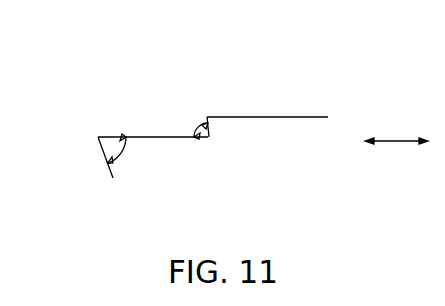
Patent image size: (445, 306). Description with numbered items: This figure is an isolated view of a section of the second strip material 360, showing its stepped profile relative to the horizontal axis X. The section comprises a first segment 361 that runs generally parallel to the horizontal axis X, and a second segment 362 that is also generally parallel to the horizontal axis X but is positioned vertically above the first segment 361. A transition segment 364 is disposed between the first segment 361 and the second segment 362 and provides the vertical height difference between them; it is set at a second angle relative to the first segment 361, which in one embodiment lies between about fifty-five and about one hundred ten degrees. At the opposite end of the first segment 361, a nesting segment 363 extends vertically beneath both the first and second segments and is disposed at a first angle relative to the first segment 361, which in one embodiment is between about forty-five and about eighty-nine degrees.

The second strip material 360 is at (142, 68).
The first segment 361 is at (148, 135).
The second segment 362 is at (294, 117).
The nesting segment 363 is at (103, 152).
The transition segment 364 is at (212, 128).
The horizontal axis X is at (396, 130).